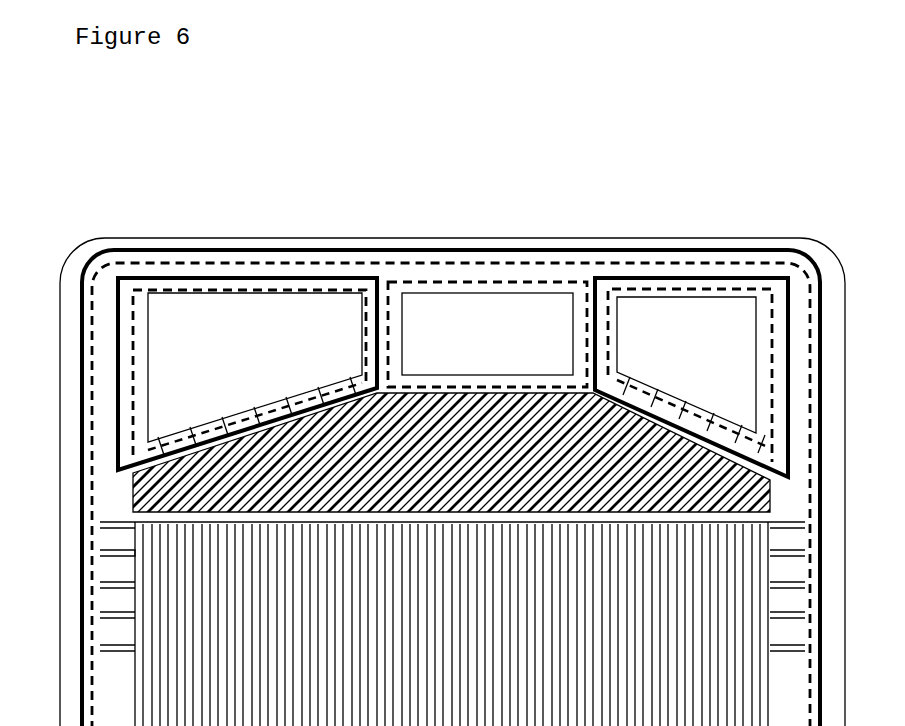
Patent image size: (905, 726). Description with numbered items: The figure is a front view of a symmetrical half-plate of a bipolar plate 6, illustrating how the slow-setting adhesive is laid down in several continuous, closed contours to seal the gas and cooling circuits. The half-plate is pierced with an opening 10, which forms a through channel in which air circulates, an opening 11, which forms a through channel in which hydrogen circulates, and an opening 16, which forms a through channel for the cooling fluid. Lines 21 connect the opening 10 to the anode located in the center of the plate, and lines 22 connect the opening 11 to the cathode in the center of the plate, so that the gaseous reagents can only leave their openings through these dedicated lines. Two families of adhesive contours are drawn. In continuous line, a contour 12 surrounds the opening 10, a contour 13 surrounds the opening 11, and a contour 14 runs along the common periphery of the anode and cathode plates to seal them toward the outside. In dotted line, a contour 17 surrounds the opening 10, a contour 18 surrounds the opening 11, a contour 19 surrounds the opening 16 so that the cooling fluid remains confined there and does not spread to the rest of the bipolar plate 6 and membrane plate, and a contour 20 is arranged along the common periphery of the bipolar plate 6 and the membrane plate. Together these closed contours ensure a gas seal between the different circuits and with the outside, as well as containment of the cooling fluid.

The bipolar plate 6 is at (110, 192).
The opening 10 is at (258, 307).
The opening 11 is at (713, 305).
The contour 12 is at (348, 447).
The contour 13 is at (783, 377).
The contour 14 is at (323, 250).
The opening 16 is at (492, 308).
The contour 17 is at (273, 405).
The contour 18 is at (767, 405).
The contour 19 is at (540, 378).
The contour 20 is at (562, 265).
The lines 21 is at (350, 447).
The lines 22 is at (640, 452).